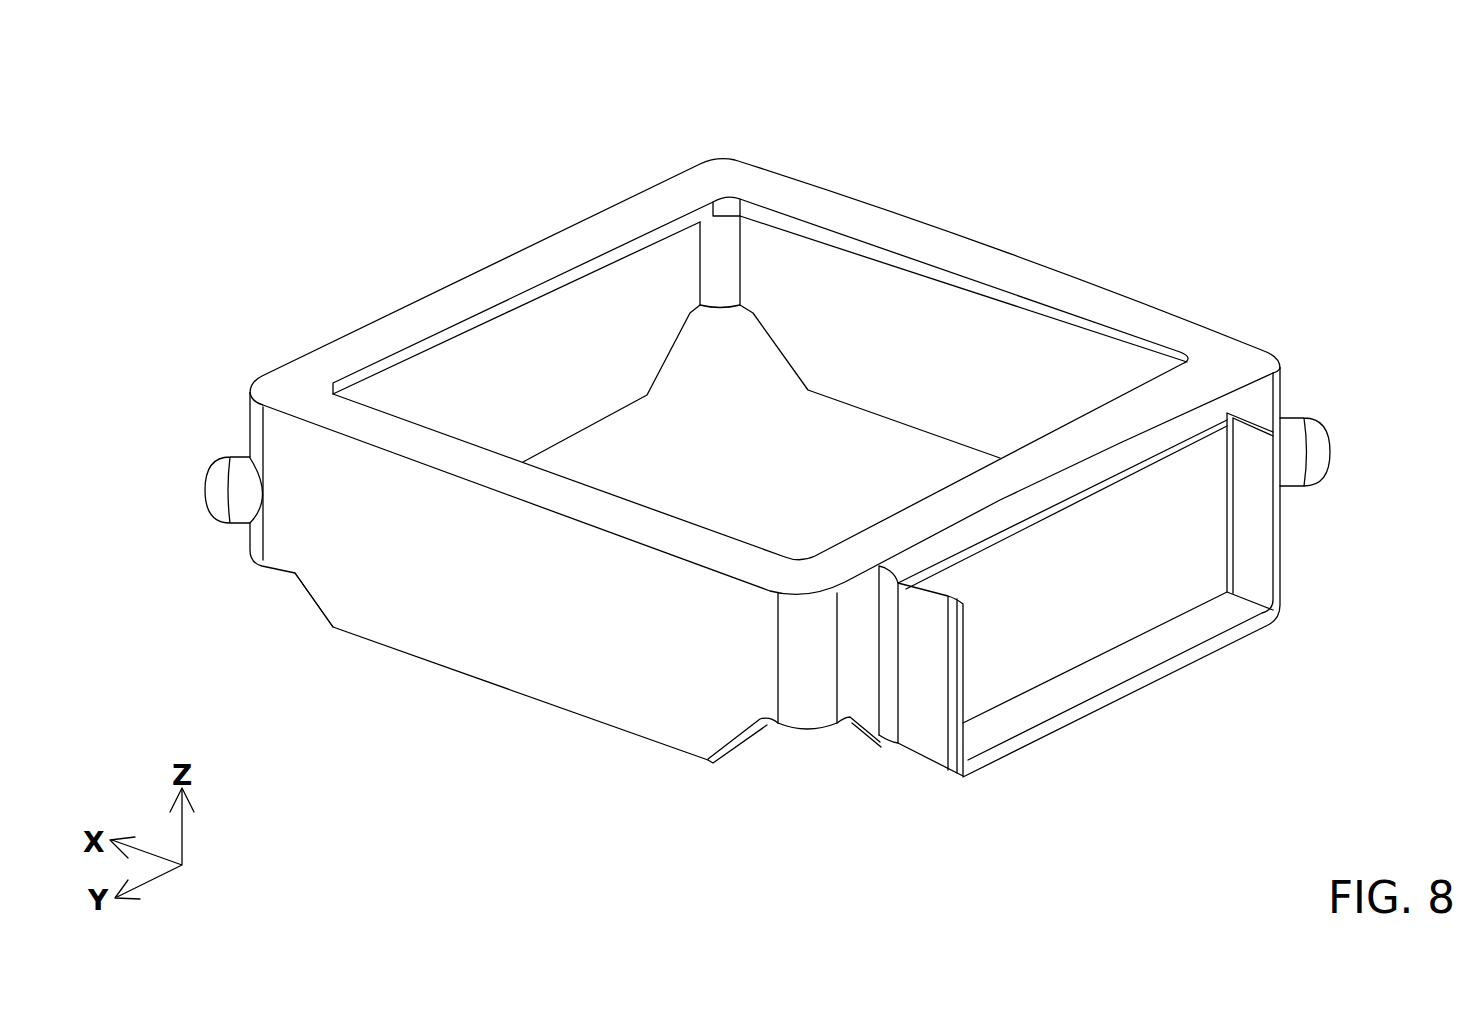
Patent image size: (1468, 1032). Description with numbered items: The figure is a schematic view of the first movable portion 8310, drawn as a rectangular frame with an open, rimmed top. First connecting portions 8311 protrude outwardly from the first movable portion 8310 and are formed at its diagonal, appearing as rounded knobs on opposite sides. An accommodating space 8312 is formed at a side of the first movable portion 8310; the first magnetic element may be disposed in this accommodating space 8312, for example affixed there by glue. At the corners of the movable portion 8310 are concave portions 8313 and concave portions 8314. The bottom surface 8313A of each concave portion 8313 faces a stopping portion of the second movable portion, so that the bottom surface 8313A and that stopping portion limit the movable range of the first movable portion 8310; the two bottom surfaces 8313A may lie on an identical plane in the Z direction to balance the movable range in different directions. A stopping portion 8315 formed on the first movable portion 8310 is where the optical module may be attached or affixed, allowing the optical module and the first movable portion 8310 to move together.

The first movable portion 8310 is at (225, 66).
The first connecting portion 8311 is at (225, 492).
The accommodating space 8312 is at (1090, 598).
The concave portion 8313 is at (776, 366).
The bottom surface 8313A is at (727, 322).
The concave portion 8314 is at (284, 612).
The stopping portion 8315 is at (1012, 272).